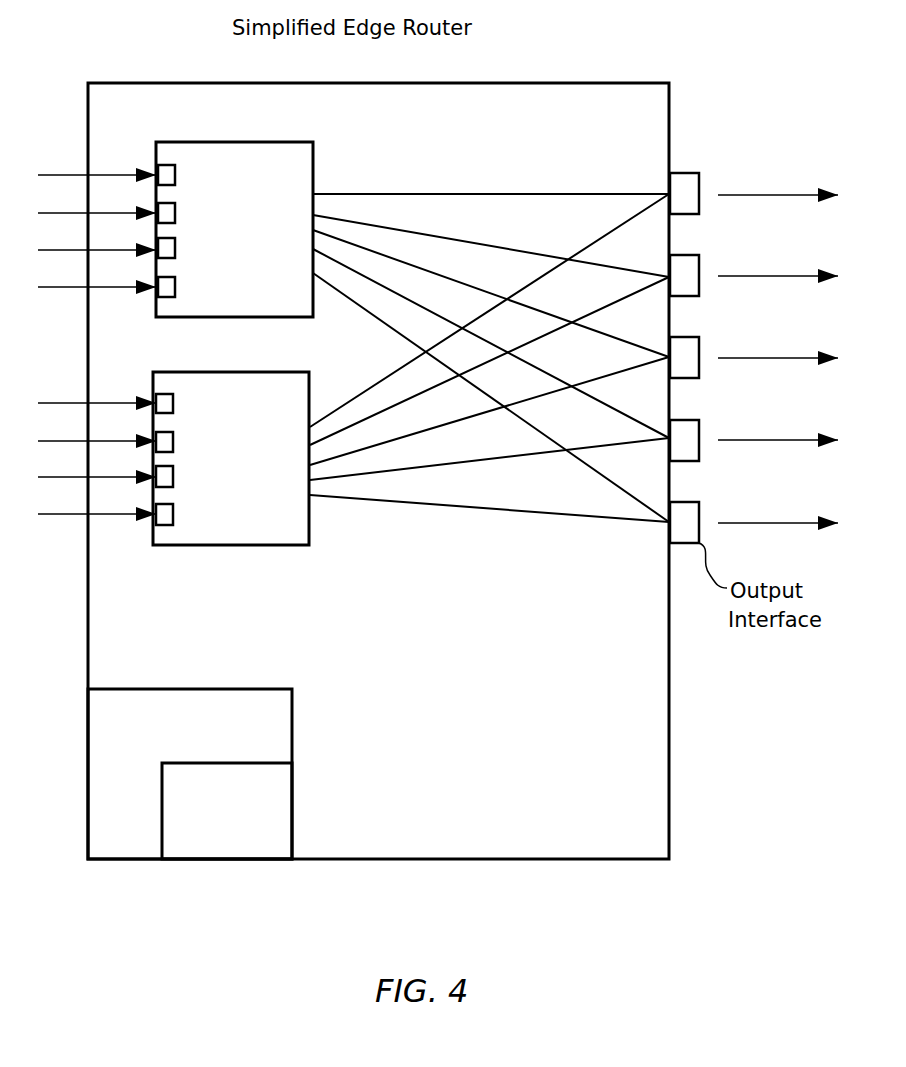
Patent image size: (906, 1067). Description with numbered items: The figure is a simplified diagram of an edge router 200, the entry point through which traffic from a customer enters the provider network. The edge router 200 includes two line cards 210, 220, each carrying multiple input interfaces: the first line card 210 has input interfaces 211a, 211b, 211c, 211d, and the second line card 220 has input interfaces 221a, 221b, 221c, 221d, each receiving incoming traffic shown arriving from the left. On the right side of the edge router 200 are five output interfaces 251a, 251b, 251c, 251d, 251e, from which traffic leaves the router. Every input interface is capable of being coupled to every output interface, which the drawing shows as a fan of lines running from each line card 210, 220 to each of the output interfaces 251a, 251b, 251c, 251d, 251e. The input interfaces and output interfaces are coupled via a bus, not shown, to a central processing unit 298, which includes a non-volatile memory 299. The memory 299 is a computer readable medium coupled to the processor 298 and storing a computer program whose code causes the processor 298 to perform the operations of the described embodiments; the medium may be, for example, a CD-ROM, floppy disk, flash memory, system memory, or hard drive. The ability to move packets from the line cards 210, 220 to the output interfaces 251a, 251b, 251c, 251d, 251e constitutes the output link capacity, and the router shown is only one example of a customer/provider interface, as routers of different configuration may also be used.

The edge router 200 is at (168, 915).
The line card 210 is at (232, 317).
The input interface 211a is at (174, 165).
The input interface 211b is at (174, 203).
The input interface 211c is at (175, 250).
The input interface 211d is at (175, 290).
The line card 220 is at (243, 545).
The input interface 221a is at (173, 394).
The input interface 221b is at (173, 432).
The input interface 221c is at (173, 478).
The input interface 221d is at (173, 515).
The output interface 251a is at (682, 173).
The output interface 251b is at (682, 255).
The output interface 251c is at (682, 337).
The output interface 251d is at (682, 420).
The output interface 251e is at (682, 502).
The central processing unit 298 is at (227, 737).
The non-volatile memory 299 is at (244, 843).